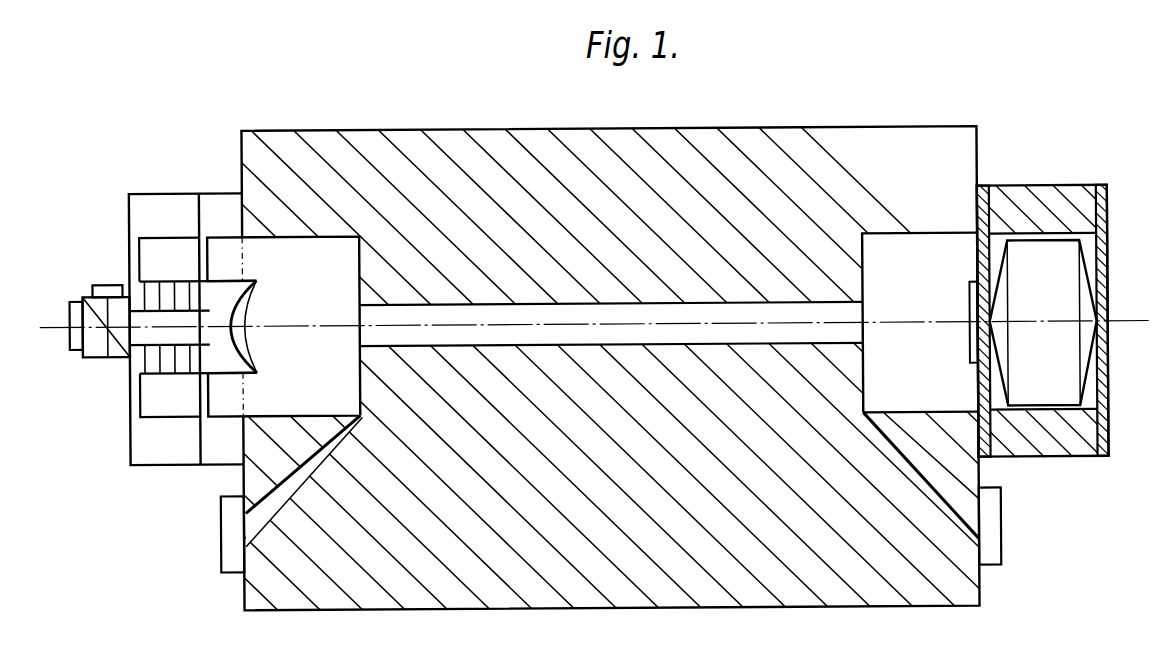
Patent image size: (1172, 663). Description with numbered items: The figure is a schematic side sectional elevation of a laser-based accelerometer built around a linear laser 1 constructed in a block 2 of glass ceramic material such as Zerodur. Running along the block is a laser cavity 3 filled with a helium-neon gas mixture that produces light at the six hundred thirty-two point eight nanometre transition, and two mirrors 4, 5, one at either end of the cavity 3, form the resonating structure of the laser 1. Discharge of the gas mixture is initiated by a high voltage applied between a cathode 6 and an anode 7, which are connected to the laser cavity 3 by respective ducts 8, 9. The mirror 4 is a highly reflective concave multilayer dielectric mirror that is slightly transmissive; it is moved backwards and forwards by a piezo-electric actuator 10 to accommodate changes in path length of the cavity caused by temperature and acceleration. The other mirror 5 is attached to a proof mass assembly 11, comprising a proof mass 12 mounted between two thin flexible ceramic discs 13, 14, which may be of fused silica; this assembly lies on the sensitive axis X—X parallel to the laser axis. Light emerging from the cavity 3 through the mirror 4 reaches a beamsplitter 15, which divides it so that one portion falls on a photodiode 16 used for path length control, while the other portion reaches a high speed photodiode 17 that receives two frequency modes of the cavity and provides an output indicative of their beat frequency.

The linear laser 1 is at (486, 303).
The block 2 is at (718, 150).
The laser cavity 3 is at (600, 322).
The mirror 4 is at (250, 302).
The mirror 5 is at (968, 354).
The cathode 6 is at (220, 561).
The anode 7 is at (995, 536).
The duct 8 is at (265, 511).
The duct 9 is at (960, 510).
The piezo-electric actuator 10 is at (166, 366).
The proof mass assembly 11 is at (1046, 180).
The proof mass 12 is at (1050, 285).
The flexible ceramic disc 13 is at (984, 188).
The flexible ceramic disc 14 is at (1106, 201).
The beamsplitter 15 is at (108, 354).
The photodiode 16 is at (112, 282).
The high speed photodiode 17 is at (75, 348).